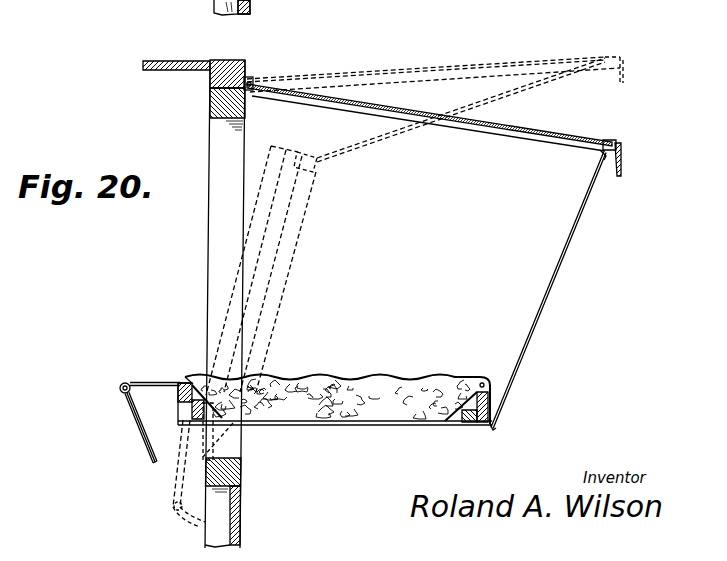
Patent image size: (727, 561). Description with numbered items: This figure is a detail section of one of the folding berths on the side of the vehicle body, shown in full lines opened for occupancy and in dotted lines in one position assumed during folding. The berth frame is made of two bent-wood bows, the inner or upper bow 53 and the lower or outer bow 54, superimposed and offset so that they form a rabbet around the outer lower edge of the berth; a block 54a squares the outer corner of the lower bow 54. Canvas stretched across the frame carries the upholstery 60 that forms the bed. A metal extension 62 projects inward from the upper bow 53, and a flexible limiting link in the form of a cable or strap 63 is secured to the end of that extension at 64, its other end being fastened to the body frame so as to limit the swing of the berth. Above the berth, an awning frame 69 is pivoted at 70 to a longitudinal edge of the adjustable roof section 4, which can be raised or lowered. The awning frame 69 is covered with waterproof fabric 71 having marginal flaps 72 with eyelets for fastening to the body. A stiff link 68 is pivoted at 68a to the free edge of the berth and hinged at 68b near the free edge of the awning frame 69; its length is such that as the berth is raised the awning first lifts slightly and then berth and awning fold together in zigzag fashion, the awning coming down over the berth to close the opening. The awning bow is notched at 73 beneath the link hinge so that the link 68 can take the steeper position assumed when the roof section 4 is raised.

The adjustable roof section 4 is at (193, 61).
The inner or upper bow 53 is at (490, 392).
The lower or outer bow 54 is at (468, 425).
The block 54a is at (483, 426).
The upholstery 60 is at (240, 248).
The metal extension 62 is at (142, 382).
The flexible limiting link (cable or strap) 63 is at (135, 428).
The cable securing point 64 is at (120, 387).
The stiff link 68 is at (388, 138).
The link pivot on berth 68a is at (318, 163).
The link hinge on awning frame 68b is at (605, 57).
The awning frame 69 is at (605, 65).
The awning frame pivot 70 is at (248, 93).
The waterproof fabric 71 is at (520, 128).
The marginal flap 72 is at (622, 163).
The notch 73 is at (603, 156).